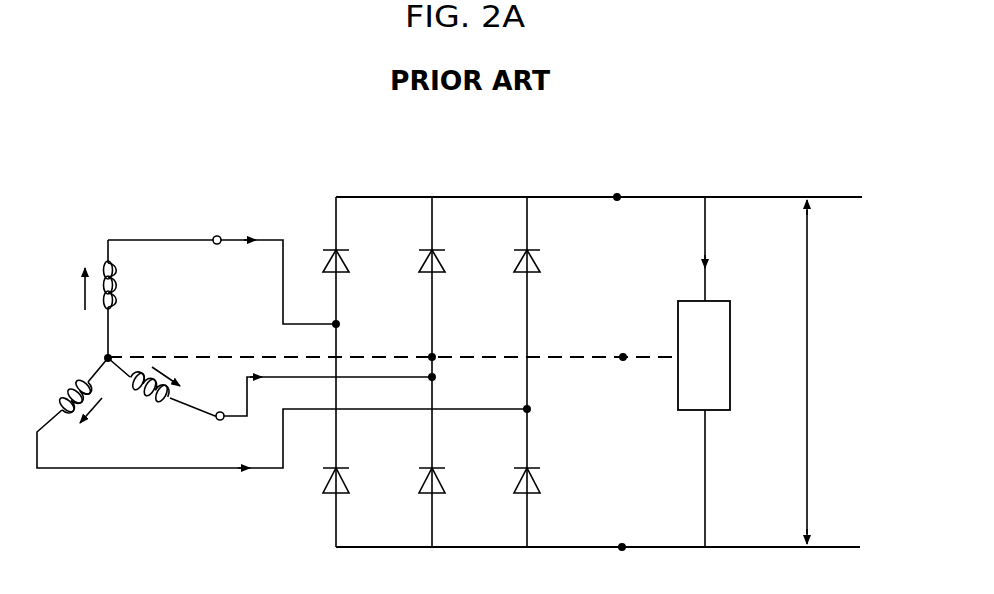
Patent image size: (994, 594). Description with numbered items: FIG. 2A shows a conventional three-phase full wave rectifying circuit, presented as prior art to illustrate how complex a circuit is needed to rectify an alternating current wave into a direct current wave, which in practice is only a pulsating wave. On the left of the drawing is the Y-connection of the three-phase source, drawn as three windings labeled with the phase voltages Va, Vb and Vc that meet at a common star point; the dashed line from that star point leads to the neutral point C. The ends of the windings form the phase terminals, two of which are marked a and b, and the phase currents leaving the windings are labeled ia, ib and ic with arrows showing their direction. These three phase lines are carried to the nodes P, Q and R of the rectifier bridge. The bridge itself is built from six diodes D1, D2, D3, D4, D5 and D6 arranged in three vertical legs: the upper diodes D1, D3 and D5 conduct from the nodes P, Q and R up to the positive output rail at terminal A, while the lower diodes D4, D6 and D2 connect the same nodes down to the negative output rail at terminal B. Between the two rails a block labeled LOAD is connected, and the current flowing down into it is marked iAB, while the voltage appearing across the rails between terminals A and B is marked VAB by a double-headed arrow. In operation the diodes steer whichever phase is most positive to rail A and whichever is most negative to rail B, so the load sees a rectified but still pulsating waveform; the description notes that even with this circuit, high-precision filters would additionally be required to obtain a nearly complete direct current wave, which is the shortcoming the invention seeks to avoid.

The diode D1 is at (352, 266).
The diode D2 is at (543, 484).
The diode D3 is at (448, 266).
The diode D4 is at (352, 484).
The diode D5 is at (543, 266).
The diode D6 is at (448, 484).
The phase a winding voltage Va is at (119, 285).
The phase b winding voltage Vb is at (153, 395).
The phase c winding voltage Vc is at (72, 396).
The terminal a is at (217, 218).
The terminal b is at (220, 397).
The phase a current ia is at (258, 219).
The phase b current ib is at (263, 394).
The phase c current ic is at (250, 450).
The load current iAB is at (726, 249).
The node P is at (346, 326).
The node Q is at (444, 381).
The node R is at (537, 411).
The positive DC terminal A is at (619, 181).
The negative DC terminal B is at (622, 533).
The neutral point C is at (623, 342).
The load LOAD is at (704, 424).
The DC output voltage VAB is at (817, 372).